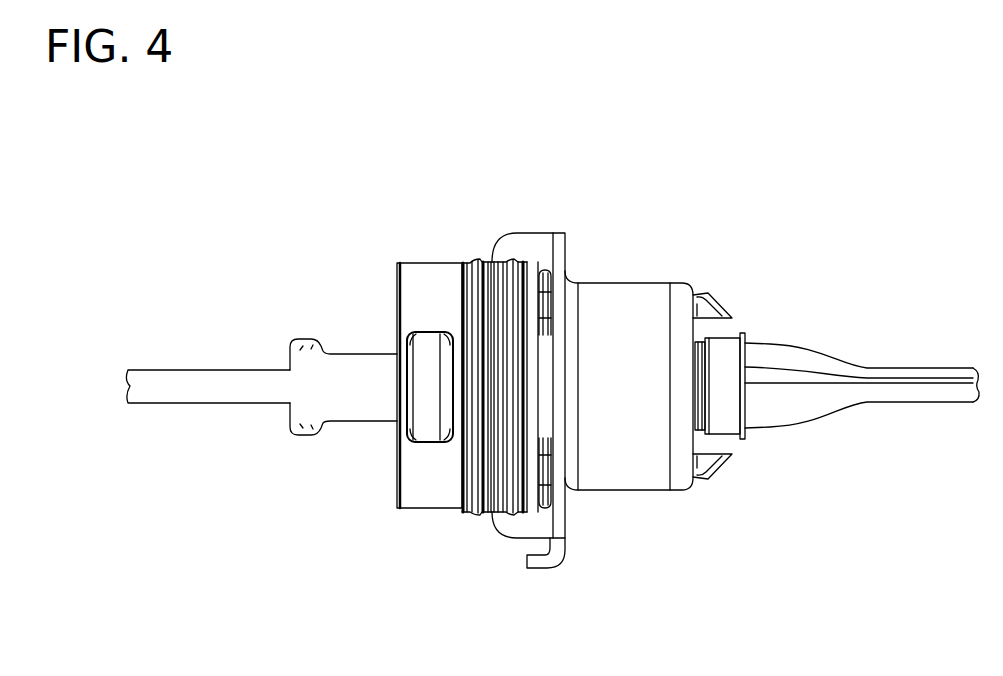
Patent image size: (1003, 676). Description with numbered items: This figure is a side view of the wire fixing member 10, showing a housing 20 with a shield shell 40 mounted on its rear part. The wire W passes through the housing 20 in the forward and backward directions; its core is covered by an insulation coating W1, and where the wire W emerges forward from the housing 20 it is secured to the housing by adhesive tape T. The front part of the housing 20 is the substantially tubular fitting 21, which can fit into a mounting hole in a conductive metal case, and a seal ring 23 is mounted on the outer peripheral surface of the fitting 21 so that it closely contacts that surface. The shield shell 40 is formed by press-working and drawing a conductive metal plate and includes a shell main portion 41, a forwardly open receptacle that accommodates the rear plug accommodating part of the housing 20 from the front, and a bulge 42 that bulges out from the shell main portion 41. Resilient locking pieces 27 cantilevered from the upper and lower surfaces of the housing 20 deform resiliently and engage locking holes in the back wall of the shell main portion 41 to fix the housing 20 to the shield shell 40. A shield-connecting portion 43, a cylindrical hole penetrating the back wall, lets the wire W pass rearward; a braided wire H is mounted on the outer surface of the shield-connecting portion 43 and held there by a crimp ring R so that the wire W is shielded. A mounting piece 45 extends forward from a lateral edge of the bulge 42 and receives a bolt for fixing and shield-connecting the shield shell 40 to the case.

The wire fixing member 10 is at (612, 226).
The housing 20 is at (438, 523).
The fitting 21 is at (435, 265).
The seal ring 23 is at (478, 262).
The resilient locking pieces 27 is at (713, 311).
The shield shell 40 is at (645, 513).
The shell main portion 41 is at (654, 302).
The bulge 42 is at (563, 523).
The shield-connecting portion 43 is at (700, 417).
The mounting piece 45 is at (523, 247).
The wire W is at (174, 370).
The insulation coating W1 is at (214, 386).
The adhesive tape T is at (355, 405).
The braided wire H is at (802, 350).
The crimp ring R is at (729, 391).